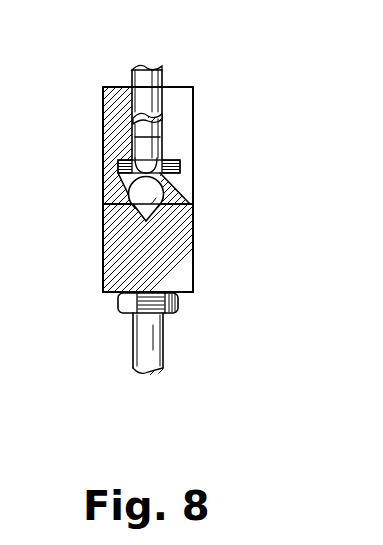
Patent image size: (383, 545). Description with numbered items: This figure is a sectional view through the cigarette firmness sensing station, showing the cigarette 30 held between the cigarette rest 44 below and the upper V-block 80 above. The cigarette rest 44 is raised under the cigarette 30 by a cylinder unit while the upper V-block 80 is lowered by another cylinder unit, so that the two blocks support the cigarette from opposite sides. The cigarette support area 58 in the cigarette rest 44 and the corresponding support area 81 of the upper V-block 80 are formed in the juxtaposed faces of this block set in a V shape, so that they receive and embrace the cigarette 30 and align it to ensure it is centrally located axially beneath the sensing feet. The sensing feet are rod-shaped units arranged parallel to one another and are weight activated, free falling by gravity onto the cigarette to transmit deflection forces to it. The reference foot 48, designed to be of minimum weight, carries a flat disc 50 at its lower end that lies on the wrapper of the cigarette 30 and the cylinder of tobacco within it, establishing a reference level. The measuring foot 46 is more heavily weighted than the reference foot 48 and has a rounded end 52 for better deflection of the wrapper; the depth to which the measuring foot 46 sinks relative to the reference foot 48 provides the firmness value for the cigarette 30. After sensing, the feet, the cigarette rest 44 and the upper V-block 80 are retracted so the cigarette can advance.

The cigarette 30 is at (166, 195).
The cigarette rest 44 is at (194, 239).
The measuring foot 46 is at (162, 128).
The reference foot 48 is at (160, 70).
The flat disc 50 is at (184, 163).
The rounded end 52 is at (118, 175).
The cigarette support area 58 is at (147, 215).
The upper V-block 80 is at (187, 101).
The cigarette support area of upper V-block 81 is at (175, 190).